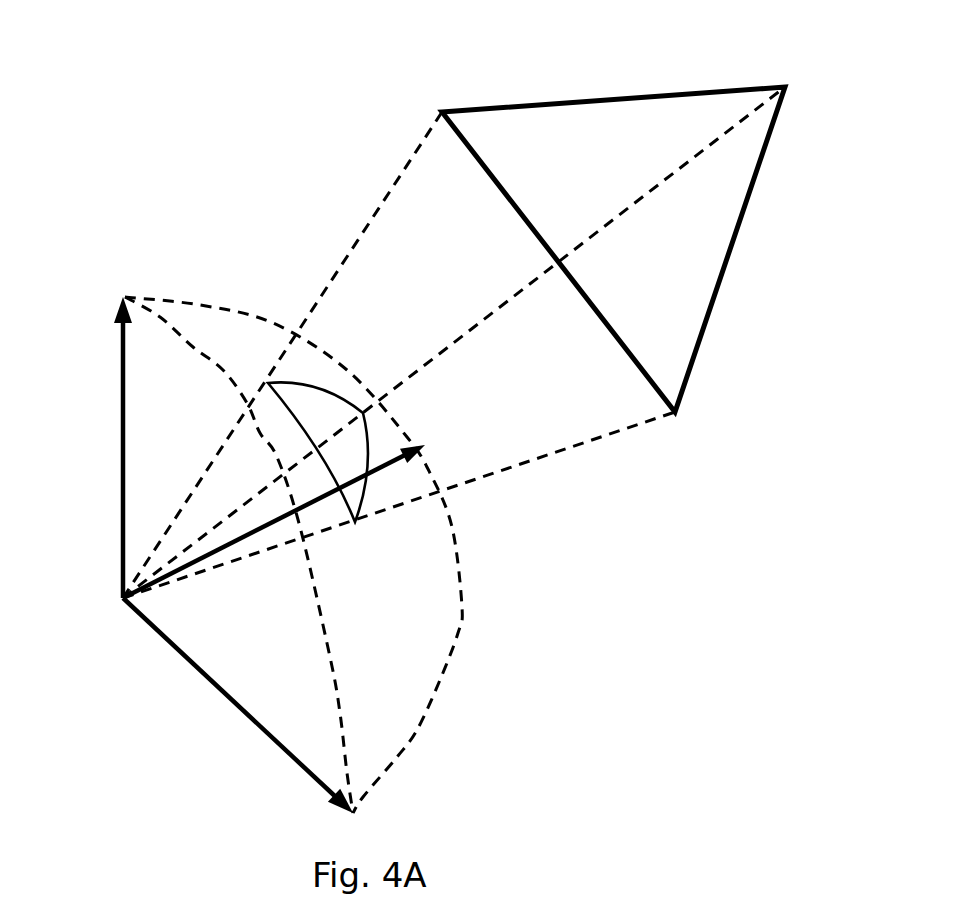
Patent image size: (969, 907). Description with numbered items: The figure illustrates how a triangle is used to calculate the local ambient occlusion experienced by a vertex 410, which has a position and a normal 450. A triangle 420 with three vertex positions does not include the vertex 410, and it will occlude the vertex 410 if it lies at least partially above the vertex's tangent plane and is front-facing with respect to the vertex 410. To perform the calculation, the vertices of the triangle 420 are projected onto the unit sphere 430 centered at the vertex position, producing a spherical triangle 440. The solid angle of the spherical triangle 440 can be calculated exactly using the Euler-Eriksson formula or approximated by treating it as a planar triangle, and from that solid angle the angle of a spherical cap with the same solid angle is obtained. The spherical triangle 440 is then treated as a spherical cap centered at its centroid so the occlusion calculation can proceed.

The vertex 410 is at (189, 555).
The triangle 420 is at (638, 259).
The unit sphere 430 is at (304, 555).
The spherical triangle 440 is at (362, 493).
The normal 450 is at (298, 514).